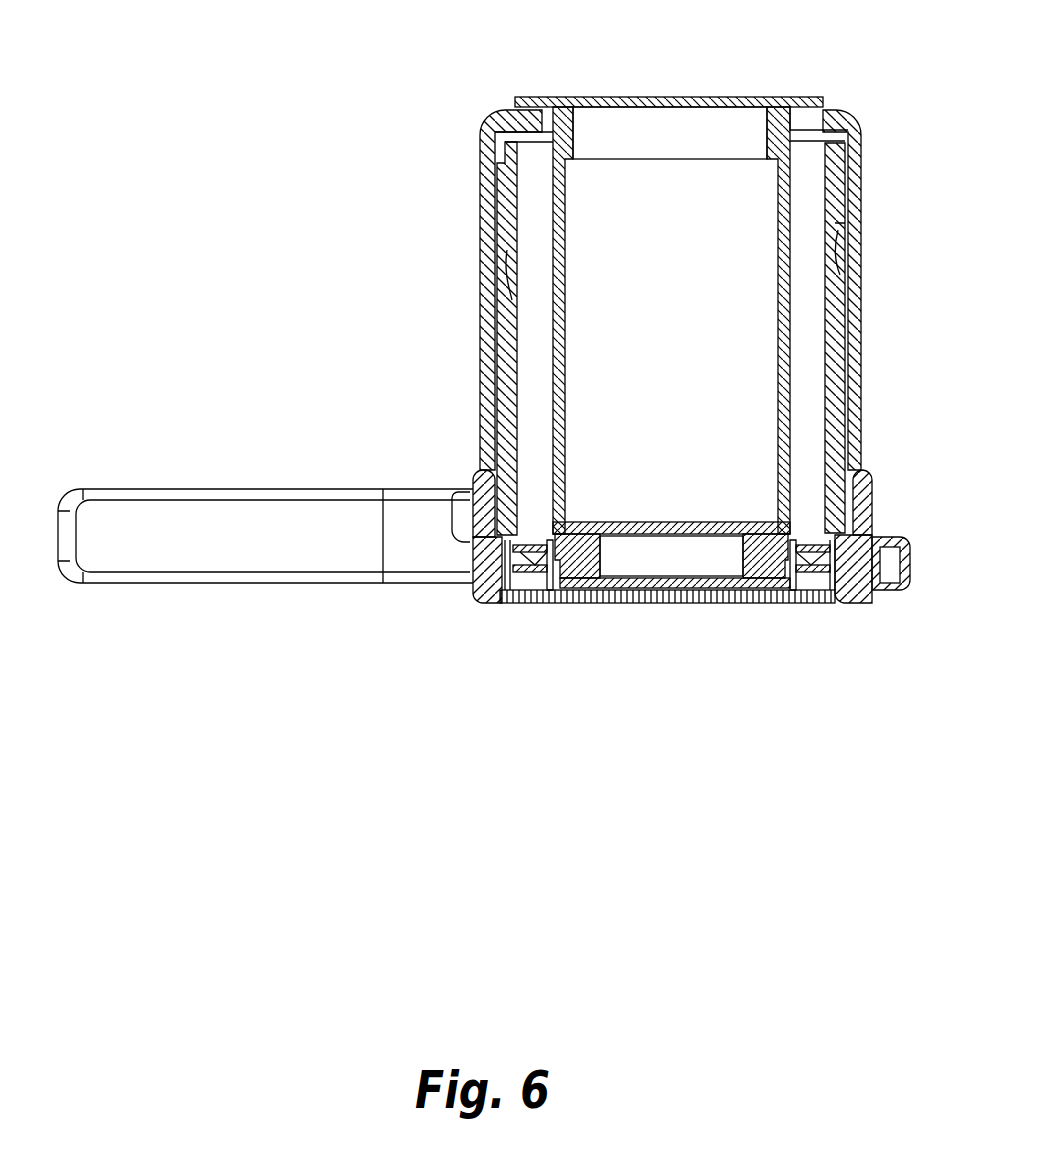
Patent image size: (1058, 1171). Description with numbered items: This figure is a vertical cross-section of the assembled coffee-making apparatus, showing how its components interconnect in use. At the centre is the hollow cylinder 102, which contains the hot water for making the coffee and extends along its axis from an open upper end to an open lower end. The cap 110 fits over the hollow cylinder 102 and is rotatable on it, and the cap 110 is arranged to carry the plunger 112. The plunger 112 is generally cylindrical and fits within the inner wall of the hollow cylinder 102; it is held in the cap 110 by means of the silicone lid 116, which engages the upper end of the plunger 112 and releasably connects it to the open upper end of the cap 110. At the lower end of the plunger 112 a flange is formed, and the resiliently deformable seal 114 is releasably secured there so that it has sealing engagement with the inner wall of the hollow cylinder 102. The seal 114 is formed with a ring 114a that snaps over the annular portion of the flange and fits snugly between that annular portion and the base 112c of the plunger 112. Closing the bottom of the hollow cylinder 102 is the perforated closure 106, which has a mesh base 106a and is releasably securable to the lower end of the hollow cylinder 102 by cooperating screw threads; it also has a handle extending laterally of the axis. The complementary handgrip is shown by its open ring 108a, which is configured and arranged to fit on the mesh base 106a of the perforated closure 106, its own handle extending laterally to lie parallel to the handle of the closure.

The hollow cylinder 102 is at (509, 303).
The perforated closure 106 is at (488, 590).
The mesh base 106a is at (668, 600).
The ring 108a is at (220, 508).
The cap 110 is at (853, 325).
The plunger 112 is at (563, 352).
The base of the plunger 112c is at (727, 528).
The resiliently deformable seal 114 is at (785, 596).
The ring 114a is at (567, 588).
The silicone lid 116 is at (727, 97).